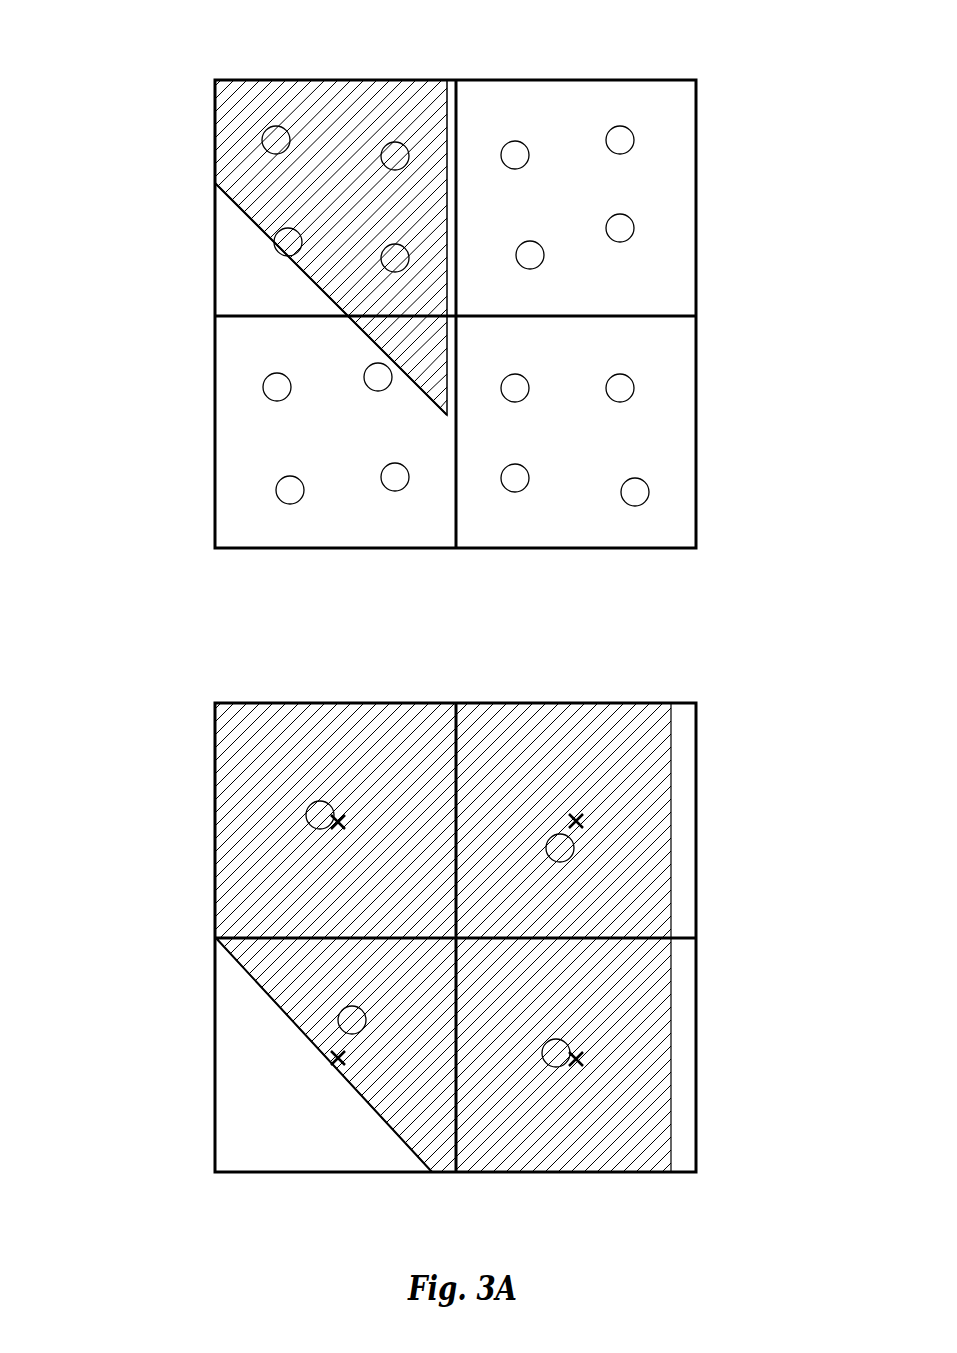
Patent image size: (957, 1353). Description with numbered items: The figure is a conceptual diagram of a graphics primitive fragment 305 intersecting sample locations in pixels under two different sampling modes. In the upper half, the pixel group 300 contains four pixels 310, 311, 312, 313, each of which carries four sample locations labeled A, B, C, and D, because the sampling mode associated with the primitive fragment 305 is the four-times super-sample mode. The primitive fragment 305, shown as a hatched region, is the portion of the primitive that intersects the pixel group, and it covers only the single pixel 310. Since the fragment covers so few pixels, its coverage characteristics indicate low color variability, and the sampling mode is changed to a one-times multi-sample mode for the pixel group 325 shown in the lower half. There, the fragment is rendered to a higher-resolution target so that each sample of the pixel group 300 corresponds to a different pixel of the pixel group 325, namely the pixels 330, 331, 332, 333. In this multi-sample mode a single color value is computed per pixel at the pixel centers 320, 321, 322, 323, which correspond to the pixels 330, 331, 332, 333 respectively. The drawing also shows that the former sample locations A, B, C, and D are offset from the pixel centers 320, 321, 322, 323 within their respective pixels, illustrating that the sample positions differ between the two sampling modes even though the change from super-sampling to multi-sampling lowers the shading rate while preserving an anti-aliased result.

The pixel group 300 is at (528, 278).
The primitive fragment 305 is at (262, 183).
The pixel 310 is at (271, 306).
The pixel 311 is at (559, 146).
The pixel 312 is at (296, 379).
The pixel 313 is at (559, 379).
The pixel center 320 is at (318, 826).
The pixel center 321 is at (583, 818).
The pixel center 322 is at (338, 1060).
The pixel center 323 is at (583, 1056).
The pixel group 325 is at (528, 882).
The pixel 330 is at (321, 766).
The pixel 331 is at (529, 766).
The pixel 332 is at (314, 999).
The pixel 333 is at (559, 999).